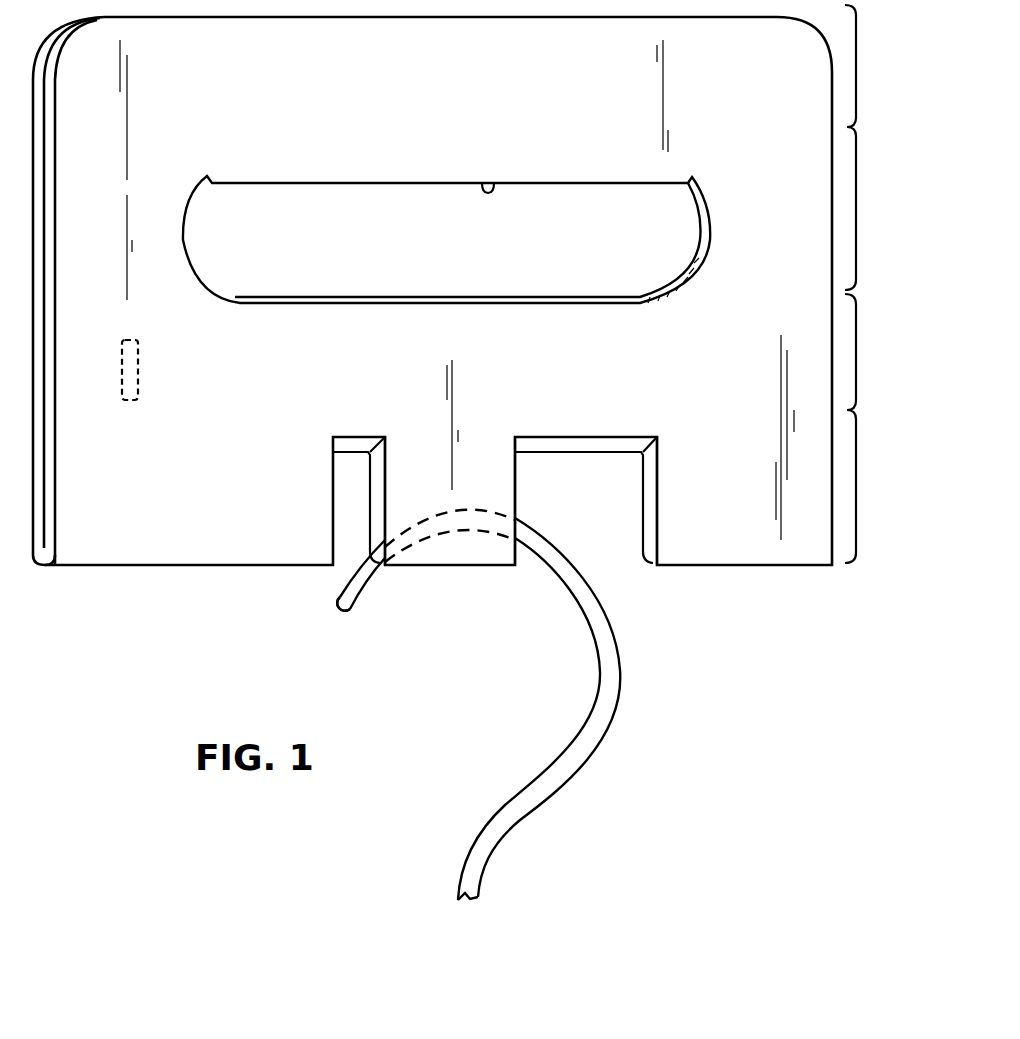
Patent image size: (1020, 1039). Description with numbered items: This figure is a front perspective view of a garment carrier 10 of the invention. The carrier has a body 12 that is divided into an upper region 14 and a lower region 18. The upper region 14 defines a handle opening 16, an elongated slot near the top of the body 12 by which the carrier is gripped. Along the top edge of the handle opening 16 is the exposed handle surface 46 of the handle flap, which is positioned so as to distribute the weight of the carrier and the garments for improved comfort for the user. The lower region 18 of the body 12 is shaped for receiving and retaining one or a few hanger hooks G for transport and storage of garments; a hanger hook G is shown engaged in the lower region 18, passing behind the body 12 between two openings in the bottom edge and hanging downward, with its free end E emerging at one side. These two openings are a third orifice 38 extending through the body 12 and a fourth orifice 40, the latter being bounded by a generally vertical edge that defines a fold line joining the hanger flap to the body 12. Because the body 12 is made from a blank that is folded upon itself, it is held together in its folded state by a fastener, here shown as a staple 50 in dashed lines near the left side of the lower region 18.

The garment carrier 10 is at (185, 594).
The body 12 is at (712, 365).
The upper region 14 is at (876, 147).
The handle opening 16 is at (425, 255).
The lower region 18 is at (876, 428).
The third orifice 38 is at (345, 476).
The fourth orifice 40 is at (595, 507).
The exposed handle surface 46 is at (493, 186).
The staple 50 is at (140, 350).
The end of strand E is at (334, 608).
The hanger hooks G is at (614, 655).